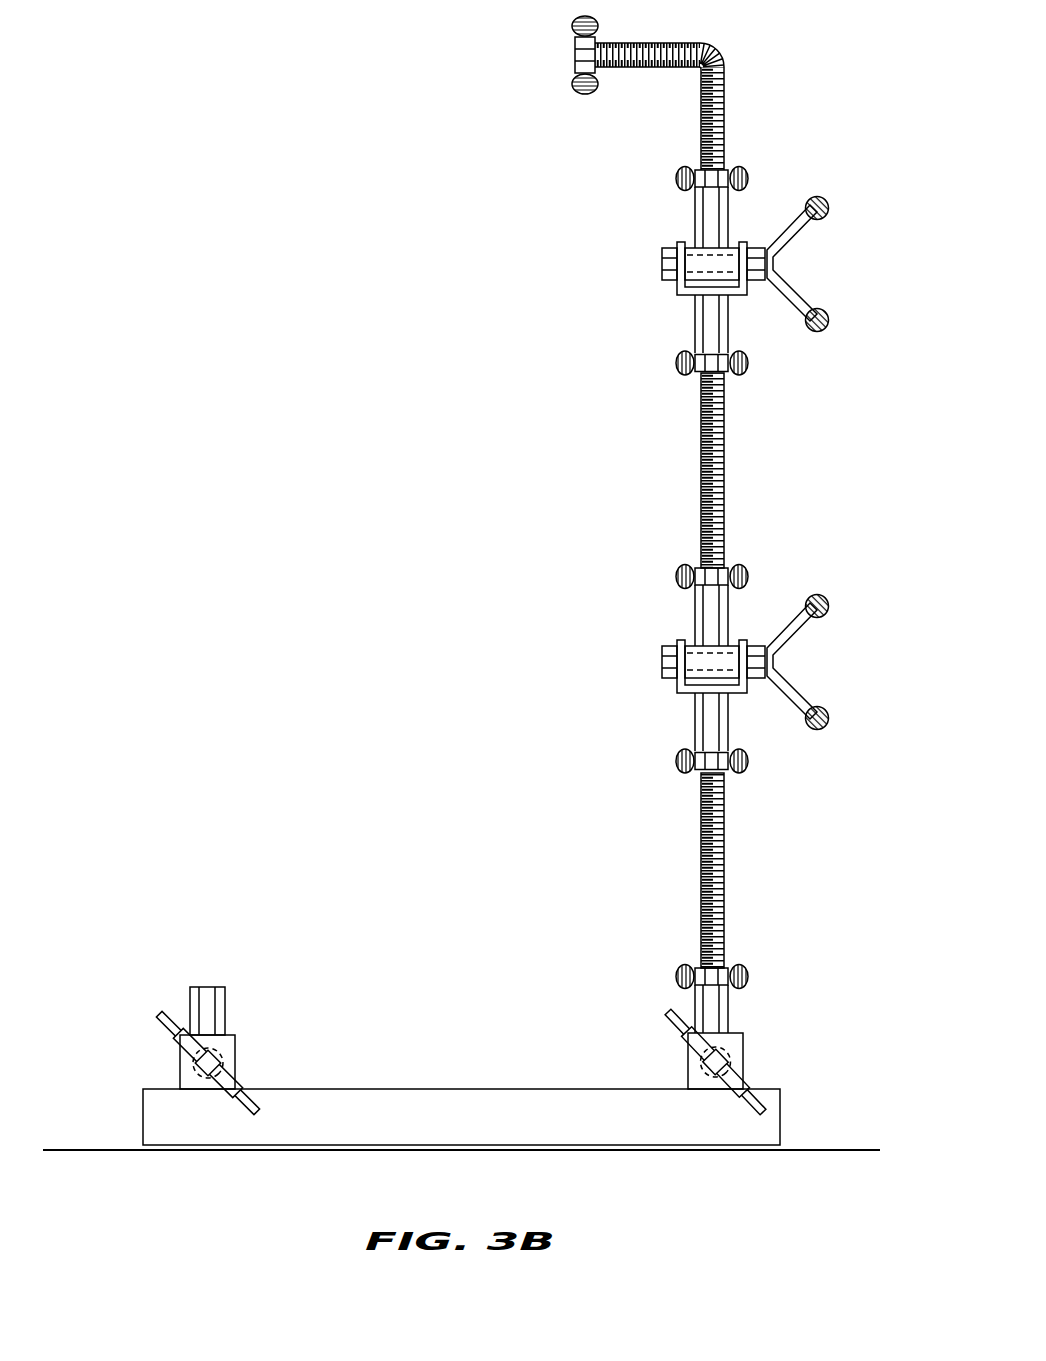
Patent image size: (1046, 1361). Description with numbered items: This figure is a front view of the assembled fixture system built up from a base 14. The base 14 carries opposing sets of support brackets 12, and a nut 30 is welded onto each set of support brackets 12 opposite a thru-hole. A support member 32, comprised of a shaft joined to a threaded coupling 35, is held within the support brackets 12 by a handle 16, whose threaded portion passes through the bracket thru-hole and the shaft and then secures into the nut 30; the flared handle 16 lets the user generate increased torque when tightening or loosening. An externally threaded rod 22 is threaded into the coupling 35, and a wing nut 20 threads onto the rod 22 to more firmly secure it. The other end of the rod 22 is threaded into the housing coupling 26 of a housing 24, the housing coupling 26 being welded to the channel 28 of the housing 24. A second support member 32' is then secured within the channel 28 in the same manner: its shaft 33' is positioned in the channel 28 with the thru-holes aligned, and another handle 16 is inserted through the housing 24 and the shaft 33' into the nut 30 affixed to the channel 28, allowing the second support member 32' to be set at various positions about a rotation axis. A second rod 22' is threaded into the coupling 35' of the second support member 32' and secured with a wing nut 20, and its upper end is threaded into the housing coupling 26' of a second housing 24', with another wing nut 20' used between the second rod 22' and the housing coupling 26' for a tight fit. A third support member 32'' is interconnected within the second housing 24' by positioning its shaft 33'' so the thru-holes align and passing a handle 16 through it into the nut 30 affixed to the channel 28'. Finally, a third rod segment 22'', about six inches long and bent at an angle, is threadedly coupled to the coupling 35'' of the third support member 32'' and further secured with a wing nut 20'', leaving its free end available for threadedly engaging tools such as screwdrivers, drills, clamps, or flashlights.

The support brackets 12 is at (758, 1055).
The base 14 is at (441, 1076).
The handle 16 is at (800, 263).
The wing nut 20 is at (667, 869).
The wing nut 20' is at (704, 470).
The wing nut 20'' is at (649, 103).
The rod 22 is at (758, 870).
The second rod 22' is at (768, 470).
The third rod segment 22'' is at (711, 106).
The housing 24 is at (657, 722).
The second housing 24' is at (657, 324).
The housing coupling 26 is at (758, 727).
The housing coupling 26' is at (762, 329).
The channel 28 is at (667, 673).
The channel 28' is at (667, 275).
The nut 30 is at (668, 265).
The support member 32 is at (503, 1010).
The second support member 32' is at (657, 615).
The third support member 32'' is at (657, 217).
The shaft 33' is at (663, 645).
The shaft 33'' is at (663, 247).
The coupling 35 is at (653, 1004).
The coupling 35' is at (653, 605).
The coupling 35'' is at (653, 207).